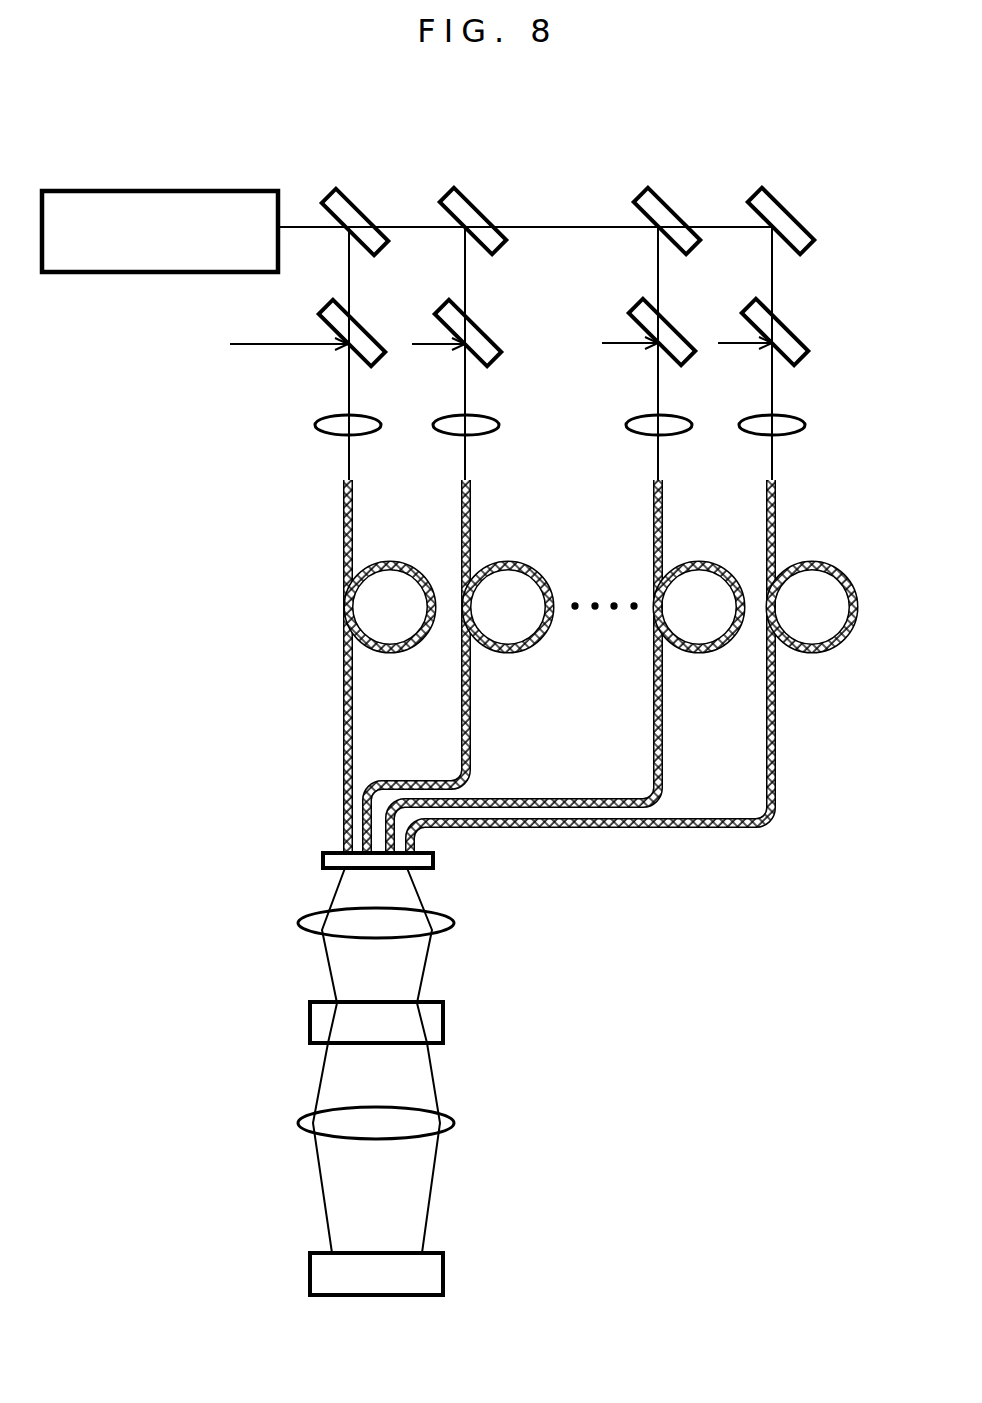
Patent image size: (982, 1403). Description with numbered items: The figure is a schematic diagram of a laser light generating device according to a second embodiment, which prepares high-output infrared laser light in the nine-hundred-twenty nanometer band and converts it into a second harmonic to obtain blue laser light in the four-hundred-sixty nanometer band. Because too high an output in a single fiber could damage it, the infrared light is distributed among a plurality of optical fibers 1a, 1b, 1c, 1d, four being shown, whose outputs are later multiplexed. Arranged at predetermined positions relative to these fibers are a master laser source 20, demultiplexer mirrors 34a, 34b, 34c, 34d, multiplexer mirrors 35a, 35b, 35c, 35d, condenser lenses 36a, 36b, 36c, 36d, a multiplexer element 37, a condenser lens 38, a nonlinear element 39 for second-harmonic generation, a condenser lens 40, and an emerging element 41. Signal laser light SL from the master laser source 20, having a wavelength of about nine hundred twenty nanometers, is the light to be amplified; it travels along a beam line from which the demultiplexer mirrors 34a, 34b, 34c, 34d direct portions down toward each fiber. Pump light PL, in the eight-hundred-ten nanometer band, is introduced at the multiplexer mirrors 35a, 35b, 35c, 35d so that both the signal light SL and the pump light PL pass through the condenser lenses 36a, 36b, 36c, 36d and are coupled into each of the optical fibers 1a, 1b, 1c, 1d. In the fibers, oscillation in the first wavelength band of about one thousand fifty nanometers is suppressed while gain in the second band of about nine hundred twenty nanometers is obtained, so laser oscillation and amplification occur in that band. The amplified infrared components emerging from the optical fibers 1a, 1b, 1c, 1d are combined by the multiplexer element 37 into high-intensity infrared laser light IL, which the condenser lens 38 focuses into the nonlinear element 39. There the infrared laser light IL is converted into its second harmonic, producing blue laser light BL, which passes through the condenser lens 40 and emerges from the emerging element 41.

The master laser source 20 is at (158, 190).
The signal laser light SL is at (295, 226).
The demultiplexer mirror 34a is at (367, 215).
The demultiplexer mirror 34b is at (478, 208).
The demultiplexer mirror 34c is at (673, 210).
The demultiplexer mirror 34d is at (790, 208).
The multiplexer mirror 35a is at (365, 330).
The multiplexer mirror 35b is at (487, 332).
The multiplexer mirror 35c is at (673, 327).
The multiplexer mirror 35d is at (790, 328).
The pump light PL is at (263, 345).
The condenser lens 36a is at (323, 435).
The condenser lens 36b is at (477, 413).
The condenser lens 36c is at (633, 420).
The condenser lens 36d is at (800, 417).
The optical fiber 1a is at (343, 750).
The optical fiber 1b is at (470, 720).
The optical fiber 1c is at (653, 758).
The optical fiber 1d is at (775, 725).
The multiplexer element 37 is at (433, 862).
The infrared laser light IL is at (320, 952).
The condenser lens 38 is at (453, 925).
The nonlinear element 39 is at (443, 1020).
The blue laser light BL is at (322, 1203).
The condenser lens 40 is at (453, 1120).
The emerging element 41 is at (443, 1275).